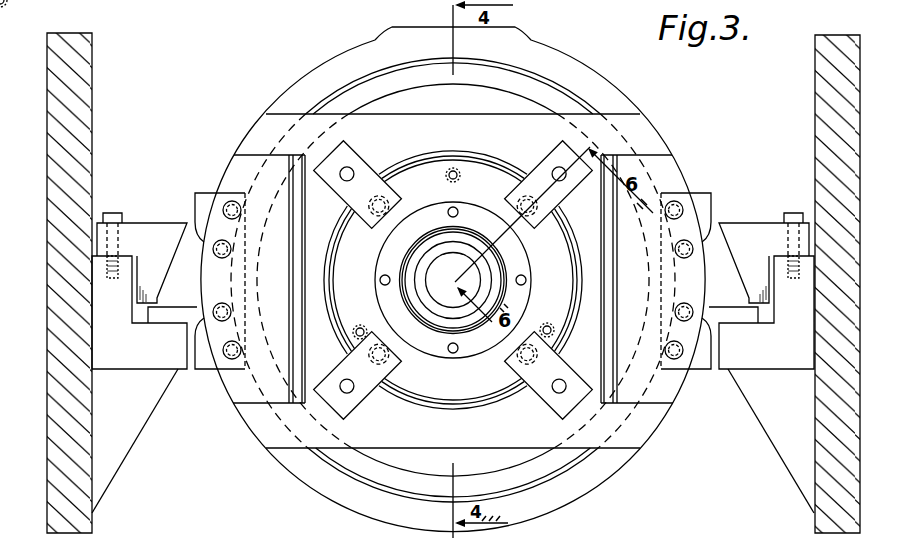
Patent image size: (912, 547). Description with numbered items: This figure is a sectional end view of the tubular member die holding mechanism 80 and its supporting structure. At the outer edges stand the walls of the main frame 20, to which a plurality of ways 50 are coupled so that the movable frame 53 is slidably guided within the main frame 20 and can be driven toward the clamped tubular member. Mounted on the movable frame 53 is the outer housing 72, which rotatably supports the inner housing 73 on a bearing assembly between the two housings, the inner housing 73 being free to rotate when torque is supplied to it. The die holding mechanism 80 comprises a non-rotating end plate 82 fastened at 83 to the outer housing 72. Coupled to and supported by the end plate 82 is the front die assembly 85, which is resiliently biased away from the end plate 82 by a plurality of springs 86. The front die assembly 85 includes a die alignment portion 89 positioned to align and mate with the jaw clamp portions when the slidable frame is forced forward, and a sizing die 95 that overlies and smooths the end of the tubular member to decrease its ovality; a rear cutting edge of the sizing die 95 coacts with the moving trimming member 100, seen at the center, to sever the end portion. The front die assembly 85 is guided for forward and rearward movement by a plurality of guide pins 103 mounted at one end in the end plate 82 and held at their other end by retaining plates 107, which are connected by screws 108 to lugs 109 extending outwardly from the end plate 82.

The main frame 20 is at (80, 72).
The ways 50 is at (148, 232).
The movable frame 53 is at (173, 286).
The outer housing 72 is at (324, 78).
The inner housing 73 is at (553, 97).
The tubular member die holding mechanism 80 is at (403, 408).
The non-rotating end plate 82 is at (420, 128).
The fastening 83 is at (221, 324).
The front die assembly 85 is at (493, 173).
The springs 86 is at (446, 178).
The die alignment portion 89 is at (416, 256).
The sizing die 95 is at (440, 322).
The trimming member 100 is at (460, 280).
The guide pins 103 is at (448, 215).
The retaining plates 107 is at (366, 186).
The screws 108 is at (351, 168).
The lugs 109 is at (338, 186).